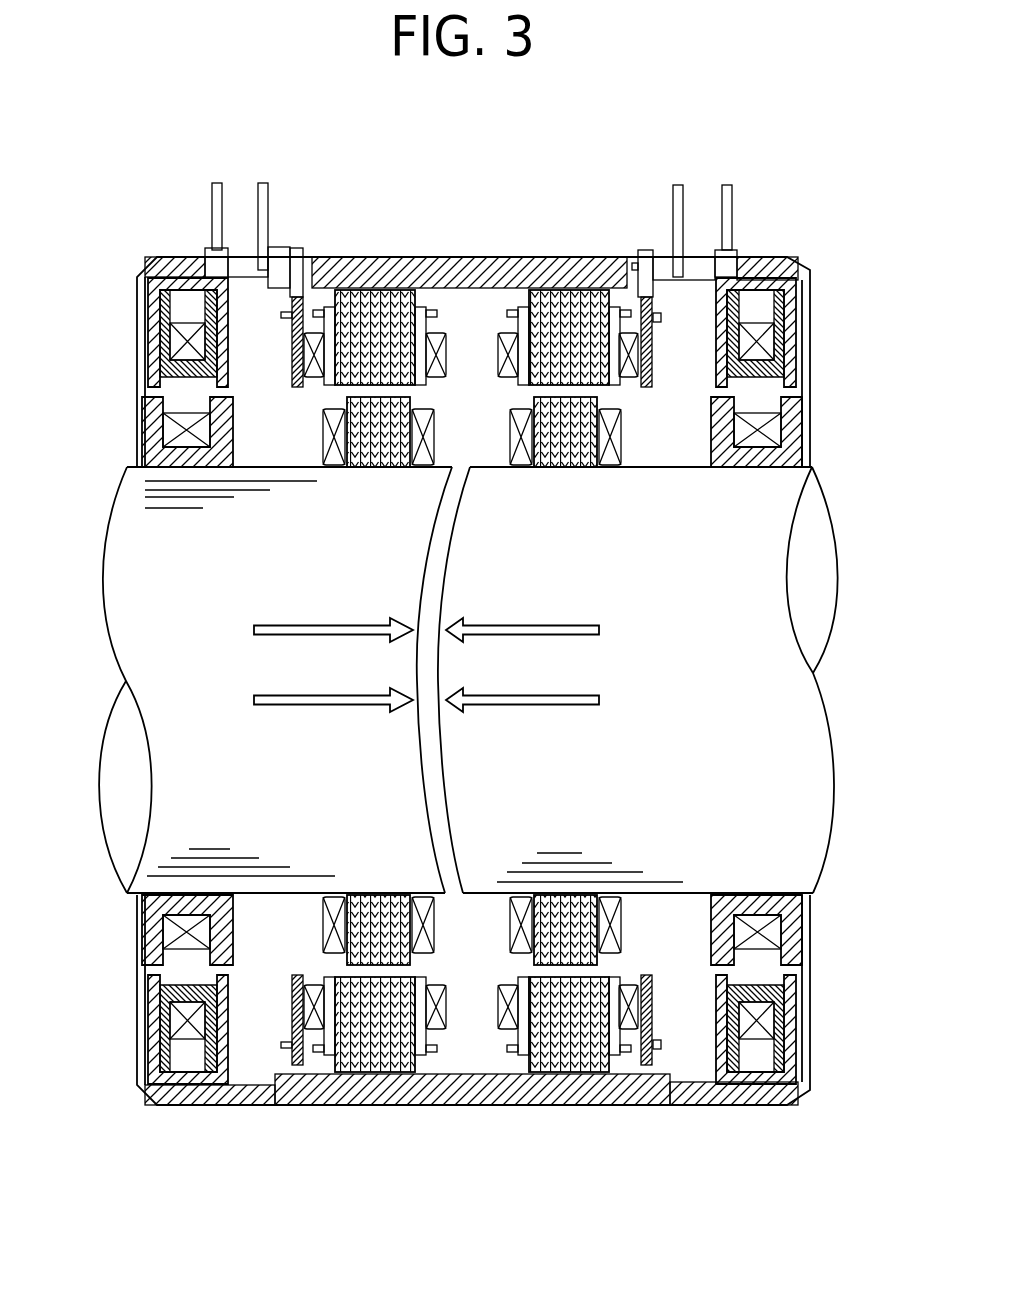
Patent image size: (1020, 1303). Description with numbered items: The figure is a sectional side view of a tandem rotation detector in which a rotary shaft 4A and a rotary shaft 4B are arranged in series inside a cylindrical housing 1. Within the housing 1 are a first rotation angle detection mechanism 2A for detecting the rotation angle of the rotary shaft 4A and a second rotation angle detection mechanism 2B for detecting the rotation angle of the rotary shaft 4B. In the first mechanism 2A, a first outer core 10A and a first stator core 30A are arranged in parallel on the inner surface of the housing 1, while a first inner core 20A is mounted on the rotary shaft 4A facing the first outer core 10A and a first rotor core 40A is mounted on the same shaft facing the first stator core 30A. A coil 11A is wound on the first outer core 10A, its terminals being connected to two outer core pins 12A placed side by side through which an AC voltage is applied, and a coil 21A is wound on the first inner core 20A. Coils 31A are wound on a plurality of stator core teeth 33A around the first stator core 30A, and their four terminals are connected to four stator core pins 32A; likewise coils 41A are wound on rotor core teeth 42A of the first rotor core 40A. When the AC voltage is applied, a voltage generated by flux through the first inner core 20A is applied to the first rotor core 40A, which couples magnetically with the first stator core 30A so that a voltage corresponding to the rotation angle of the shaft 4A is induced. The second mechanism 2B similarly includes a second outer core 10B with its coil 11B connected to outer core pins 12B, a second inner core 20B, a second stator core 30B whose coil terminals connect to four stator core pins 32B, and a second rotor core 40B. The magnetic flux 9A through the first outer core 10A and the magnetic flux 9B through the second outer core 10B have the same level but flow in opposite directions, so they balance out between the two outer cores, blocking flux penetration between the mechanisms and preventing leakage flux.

The housing 1 is at (153, 267).
The first rotation angle detection mechanism 2A is at (576, 385).
The second rotation angle detection mechanism 2B is at (369, 360).
The rotary shaft 4A is at (659, 773).
The rotary shaft 4B is at (316, 769).
The magnetic flux 9A is at (599, 630).
The magnetic flux 9B is at (254, 630).
The first outer core 10A is at (814, 327).
The second outer core 10B is at (129, 332).
The coil 11A is at (767, 342).
The coil 11B is at (185, 340).
The outer core pins 12A is at (735, 215).
The outer core pins 12B is at (210, 213).
The first inner core 20A is at (813, 439).
The second inner core 20B is at (140, 420).
The coil 21A is at (773, 437).
The first stator core 30A is at (500, 392).
The second stator core 30B is at (439, 390).
The coils 31A is at (628, 378).
The stator core pins 32A is at (673, 215).
The stator core pins 32B is at (270, 210).
The stator core teeth 33A is at (611, 387).
The first rotor core 40A is at (608, 493).
The second rotor core 40B is at (354, 478).
The coils 41A is at (598, 469).
The rotor core teeth 42A is at (557, 470).